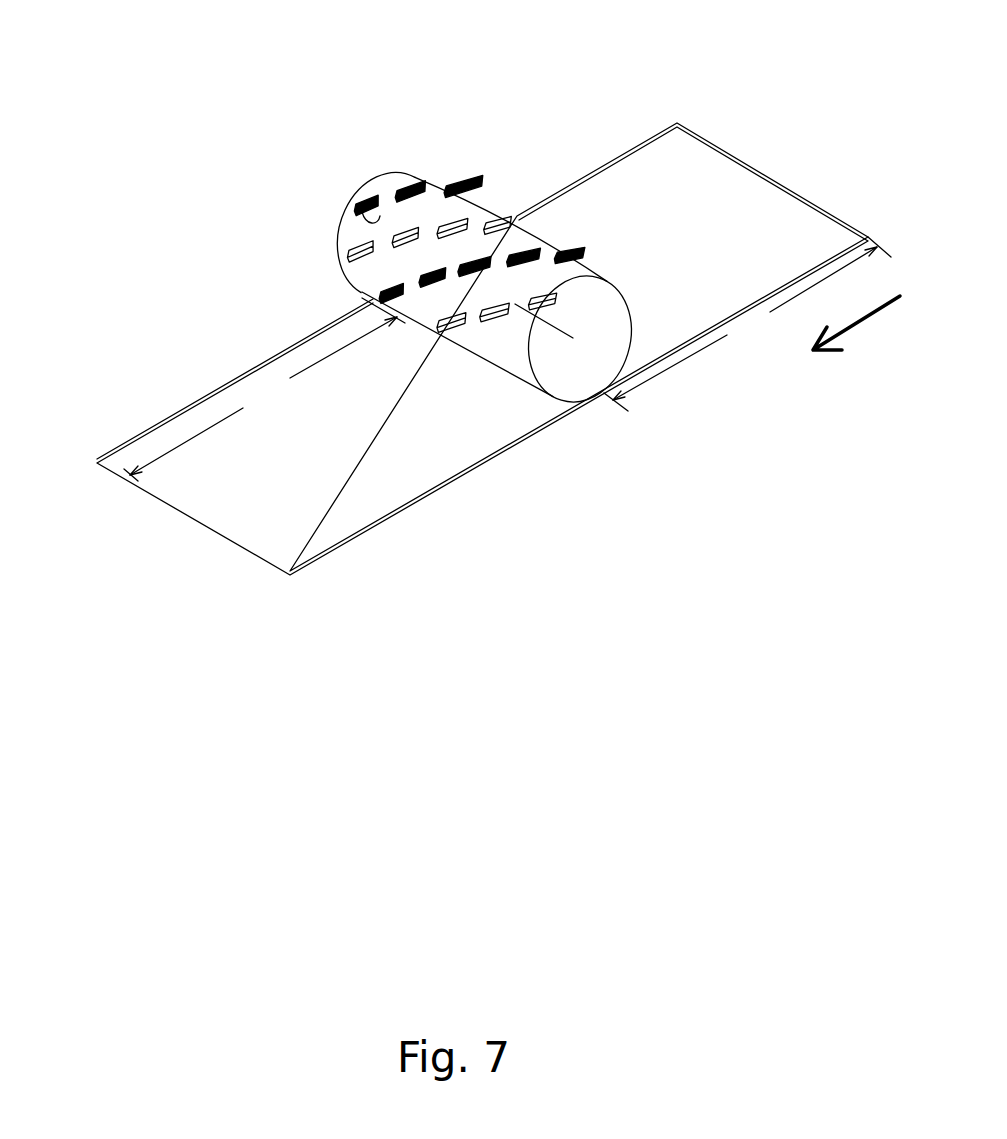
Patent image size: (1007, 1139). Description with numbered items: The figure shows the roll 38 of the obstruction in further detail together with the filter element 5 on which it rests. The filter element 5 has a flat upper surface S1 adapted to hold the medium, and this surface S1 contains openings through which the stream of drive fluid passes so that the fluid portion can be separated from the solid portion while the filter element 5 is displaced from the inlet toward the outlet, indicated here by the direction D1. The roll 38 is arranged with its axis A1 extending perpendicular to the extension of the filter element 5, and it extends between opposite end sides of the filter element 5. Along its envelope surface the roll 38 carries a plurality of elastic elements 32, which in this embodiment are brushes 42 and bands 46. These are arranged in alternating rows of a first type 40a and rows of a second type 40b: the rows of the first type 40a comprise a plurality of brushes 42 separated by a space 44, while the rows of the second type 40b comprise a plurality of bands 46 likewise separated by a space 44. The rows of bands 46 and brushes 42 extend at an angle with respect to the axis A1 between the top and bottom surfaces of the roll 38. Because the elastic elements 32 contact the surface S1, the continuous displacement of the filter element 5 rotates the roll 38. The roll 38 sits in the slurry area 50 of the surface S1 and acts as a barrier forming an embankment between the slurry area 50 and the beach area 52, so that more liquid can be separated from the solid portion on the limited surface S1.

The filter element 5 is at (482, 360).
The upper surface S1 is at (260, 479).
The roll 38 is at (403, 170).
The elastic elements 32 is at (372, 293).
The brushes 42 is at (379, 177).
The bands 46 is at (421, 381).
The rows of a first type 40a is at (348, 294).
The rows of a second type 40b is at (318, 252).
The space 44 is at (415, 290).
The axis A1 is at (333, 200).
The slurry area 50 is at (747, 324).
The beach area 52 is at (264, 389).
The direction of movement D1 is at (864, 324).